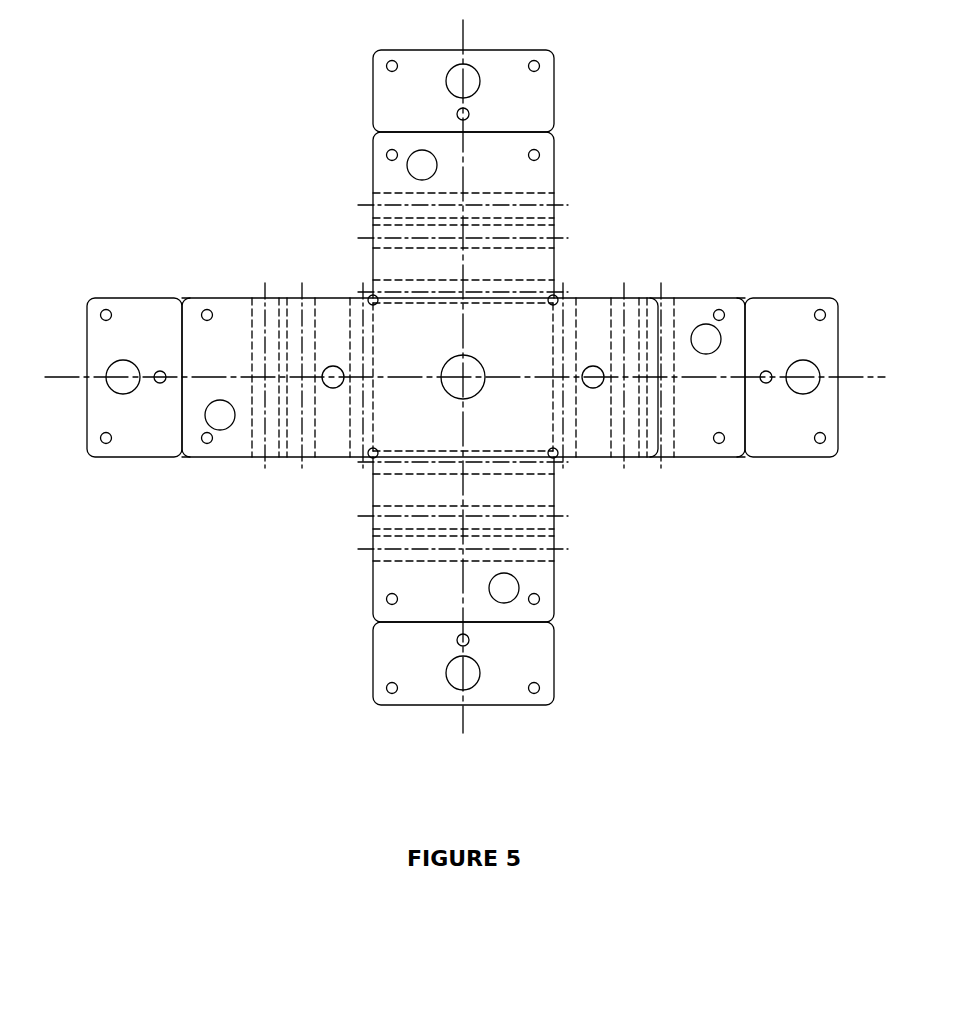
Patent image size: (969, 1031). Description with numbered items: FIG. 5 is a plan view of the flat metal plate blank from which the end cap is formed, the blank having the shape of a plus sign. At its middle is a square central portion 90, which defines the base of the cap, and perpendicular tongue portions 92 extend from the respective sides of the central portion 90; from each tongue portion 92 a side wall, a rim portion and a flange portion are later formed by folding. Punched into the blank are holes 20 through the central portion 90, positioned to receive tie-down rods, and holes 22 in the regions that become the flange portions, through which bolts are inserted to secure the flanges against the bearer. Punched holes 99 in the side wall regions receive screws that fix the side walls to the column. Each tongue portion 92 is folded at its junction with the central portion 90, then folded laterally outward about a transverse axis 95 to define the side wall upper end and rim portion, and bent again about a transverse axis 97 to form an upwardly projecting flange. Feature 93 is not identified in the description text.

The hole 20 is at (455, 390).
The hole 22 is at (106, 309).
The square central portion 90 is at (525, 333).
The tongue portion 92 is at (537, 104).
The alignment hole 93 is at (507, 300).
The transverse axis 95 is at (370, 238).
The transverse axis 97 is at (368, 205).
The punched hole 99 is at (592, 392).